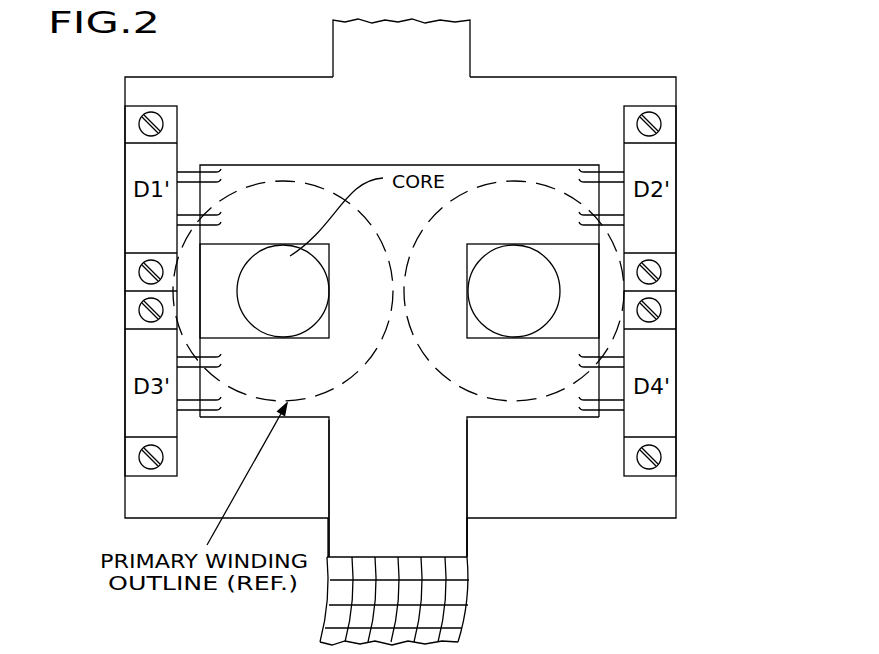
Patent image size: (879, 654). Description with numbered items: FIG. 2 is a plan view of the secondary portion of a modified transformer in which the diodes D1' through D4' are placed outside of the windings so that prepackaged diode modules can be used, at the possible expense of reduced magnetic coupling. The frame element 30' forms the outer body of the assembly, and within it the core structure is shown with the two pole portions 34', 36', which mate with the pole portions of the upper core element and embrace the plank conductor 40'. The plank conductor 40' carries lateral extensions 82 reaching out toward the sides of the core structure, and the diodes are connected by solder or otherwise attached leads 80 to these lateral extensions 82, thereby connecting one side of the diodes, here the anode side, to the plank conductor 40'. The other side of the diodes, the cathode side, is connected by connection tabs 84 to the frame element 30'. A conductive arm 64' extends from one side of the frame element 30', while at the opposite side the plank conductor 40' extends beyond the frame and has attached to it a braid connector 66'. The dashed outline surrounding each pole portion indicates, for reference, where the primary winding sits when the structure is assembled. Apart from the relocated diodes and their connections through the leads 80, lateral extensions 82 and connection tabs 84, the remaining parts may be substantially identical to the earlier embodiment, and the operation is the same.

The frame element 30' is at (420, 337).
The conductive arm 64' is at (401, 48).
The plank conductor 40' is at (398, 487).
The pole portion 36' is at (264, 291).
The pole portion 34' is at (533, 291).
The lateral extensions 82 is at (282, 173).
The connection tabs 84 is at (133, 118).
The leads 80 is at (183, 238).
The braid connector 66' is at (473, 601).